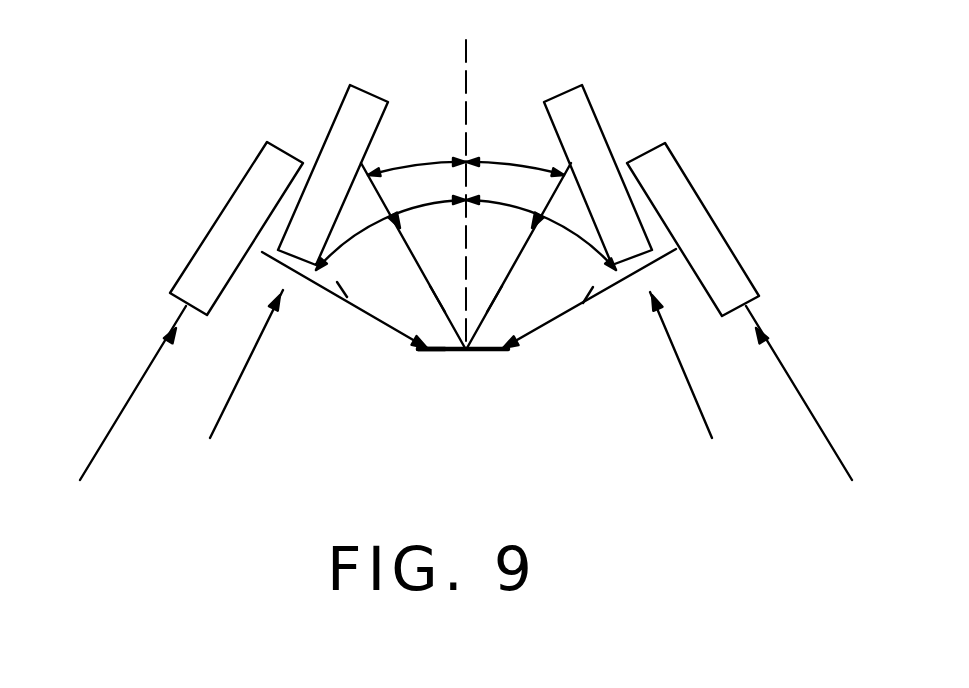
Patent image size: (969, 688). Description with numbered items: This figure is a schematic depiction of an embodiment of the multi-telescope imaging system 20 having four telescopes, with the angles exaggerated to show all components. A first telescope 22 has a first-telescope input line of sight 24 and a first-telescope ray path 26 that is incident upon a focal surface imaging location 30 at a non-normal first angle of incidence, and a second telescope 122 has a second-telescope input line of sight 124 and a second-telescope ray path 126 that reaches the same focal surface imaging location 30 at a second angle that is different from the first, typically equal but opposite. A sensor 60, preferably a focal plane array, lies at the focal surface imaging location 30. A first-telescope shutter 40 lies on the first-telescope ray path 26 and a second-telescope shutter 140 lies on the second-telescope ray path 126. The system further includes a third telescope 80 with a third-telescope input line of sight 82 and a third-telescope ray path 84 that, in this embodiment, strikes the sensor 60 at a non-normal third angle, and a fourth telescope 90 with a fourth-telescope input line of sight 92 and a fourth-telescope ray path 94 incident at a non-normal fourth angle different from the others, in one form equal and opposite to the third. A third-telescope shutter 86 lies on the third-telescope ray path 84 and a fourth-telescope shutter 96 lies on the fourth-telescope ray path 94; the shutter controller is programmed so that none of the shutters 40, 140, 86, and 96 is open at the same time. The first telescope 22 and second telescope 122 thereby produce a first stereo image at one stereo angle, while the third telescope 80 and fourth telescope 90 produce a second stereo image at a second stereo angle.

The multi-telescope imaging system 20 is at (245, 78).
The first telescope 22 is at (341, 103).
The second telescope 122 is at (585, 92).
The third telescope 80 is at (257, 157).
The fourth telescope 90 is at (681, 170).
The first-telescope input line of sight 24 is at (221, 422).
The second-telescope input line of sight 124 is at (704, 420).
The third-telescope input line of sight 82 is at (138, 385).
The fourth-telescope input line of sight 92 is at (795, 386).
The first-telescope shutter 40 is at (440, 275).
The second-telescope shutter 140 is at (492, 275).
The first-telescope ray path 26 is at (436, 297).
The second-telescope ray path 126 is at (496, 297).
The focal surface imaging location 30 is at (508, 360).
The sensor 60 is at (443, 345).
The third-telescope ray path 84 is at (367, 313).
The third-telescope shutter 86 is at (337, 299).
The fourth-telescope ray path 94 is at (548, 320).
The fourth-telescope shutter 96 is at (589, 300).